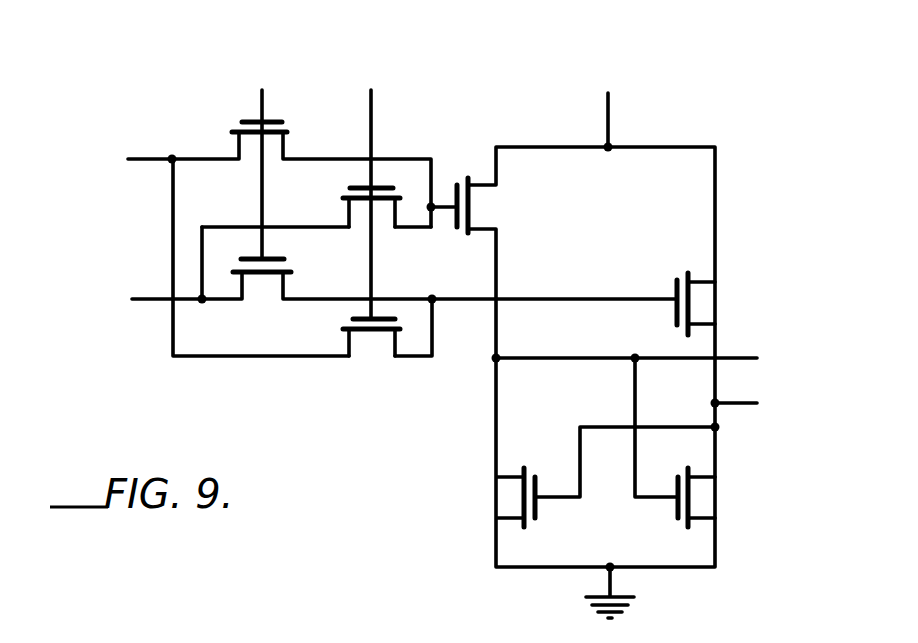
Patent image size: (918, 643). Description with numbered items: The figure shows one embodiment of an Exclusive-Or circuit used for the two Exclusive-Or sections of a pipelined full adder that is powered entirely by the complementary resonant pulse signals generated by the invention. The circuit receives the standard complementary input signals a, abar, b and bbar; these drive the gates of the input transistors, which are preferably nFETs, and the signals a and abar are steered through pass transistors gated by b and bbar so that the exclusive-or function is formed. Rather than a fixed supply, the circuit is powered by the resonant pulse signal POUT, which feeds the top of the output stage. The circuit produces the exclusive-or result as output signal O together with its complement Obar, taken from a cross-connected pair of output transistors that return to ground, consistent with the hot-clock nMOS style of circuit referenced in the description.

The input signal a is at (105, 157).
The complement input signal a-bar abar is at (118, 281).
The input signal b is at (370, 72).
The complement input signal b-bar bbar is at (272, 48).
The complementary resonant pulse signal POUT is at (621, 73).
The output signal O is at (769, 361).
The complement output signal O-bar Obar is at (779, 388).